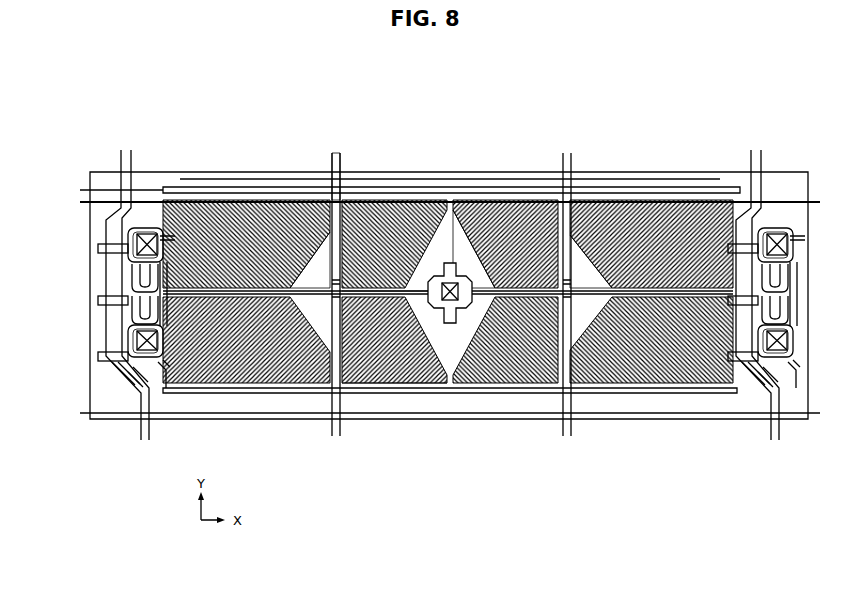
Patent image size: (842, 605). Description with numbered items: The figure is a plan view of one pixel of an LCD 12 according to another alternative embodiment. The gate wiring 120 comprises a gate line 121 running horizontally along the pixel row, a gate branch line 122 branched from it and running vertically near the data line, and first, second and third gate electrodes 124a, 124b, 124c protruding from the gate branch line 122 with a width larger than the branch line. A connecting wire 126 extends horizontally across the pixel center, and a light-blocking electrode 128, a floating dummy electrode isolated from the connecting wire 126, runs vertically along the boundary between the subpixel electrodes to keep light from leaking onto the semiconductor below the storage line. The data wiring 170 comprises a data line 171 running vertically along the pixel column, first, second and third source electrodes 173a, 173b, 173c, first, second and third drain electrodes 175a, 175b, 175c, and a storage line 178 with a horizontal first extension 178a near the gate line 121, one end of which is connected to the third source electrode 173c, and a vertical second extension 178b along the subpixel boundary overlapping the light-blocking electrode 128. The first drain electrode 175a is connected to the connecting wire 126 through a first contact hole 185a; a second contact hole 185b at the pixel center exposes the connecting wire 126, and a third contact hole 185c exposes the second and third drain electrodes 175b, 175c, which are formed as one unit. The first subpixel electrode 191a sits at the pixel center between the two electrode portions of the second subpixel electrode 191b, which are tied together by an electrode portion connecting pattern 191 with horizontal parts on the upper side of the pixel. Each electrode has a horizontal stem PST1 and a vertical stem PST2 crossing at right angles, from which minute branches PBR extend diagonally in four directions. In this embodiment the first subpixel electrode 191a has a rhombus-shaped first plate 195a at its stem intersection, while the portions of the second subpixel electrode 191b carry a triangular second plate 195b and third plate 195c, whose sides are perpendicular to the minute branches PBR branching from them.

The LCD 12 is at (438, 130).
The gate wiring 120 is at (333, 491).
The gate line 121 is at (145, 192).
The gate branch line 122 is at (110, 398).
The first gate electrode 124a is at (118, 258).
The second gate electrode 124b is at (118, 306).
The third gate electrode 124c is at (115, 361).
The connecting wire 126 is at (165, 255).
The light-blocking electrode 128 is at (330, 388).
The data wiring 170 is at (489, 480).
The data line 171 is at (112, 381).
The first source electrode 173a is at (122, 273).
The second source electrode 173b is at (122, 291).
The third source electrode 173c is at (138, 375).
The first drain electrode 175a is at (125, 246).
The second drain electrode 175b is at (125, 330).
The third drain electrode 175c is at (165, 370).
The storage line 178 is at (388, 182).
The first extension 178a is at (229, 394).
The second extension 178b is at (338, 152).
The first contact hole 185a is at (131, 229).
The second contact hole 185b is at (130, 341).
The third contact hole 185c is at (456, 286).
The electrode portion connecting pattern 191 is at (448, 298).
The first subpixel electrode 191a is at (400, 385).
The second subpixel electrode 191b is at (489, 559).
The first plate 195a is at (485, 272).
The second plate 195b is at (311, 266).
The third plate 195c is at (585, 276).
The horizontal stem PST1 is at (377, 372).
The vertical stem PST2 is at (351, 380).
The minute branches PBR is at (415, 385).